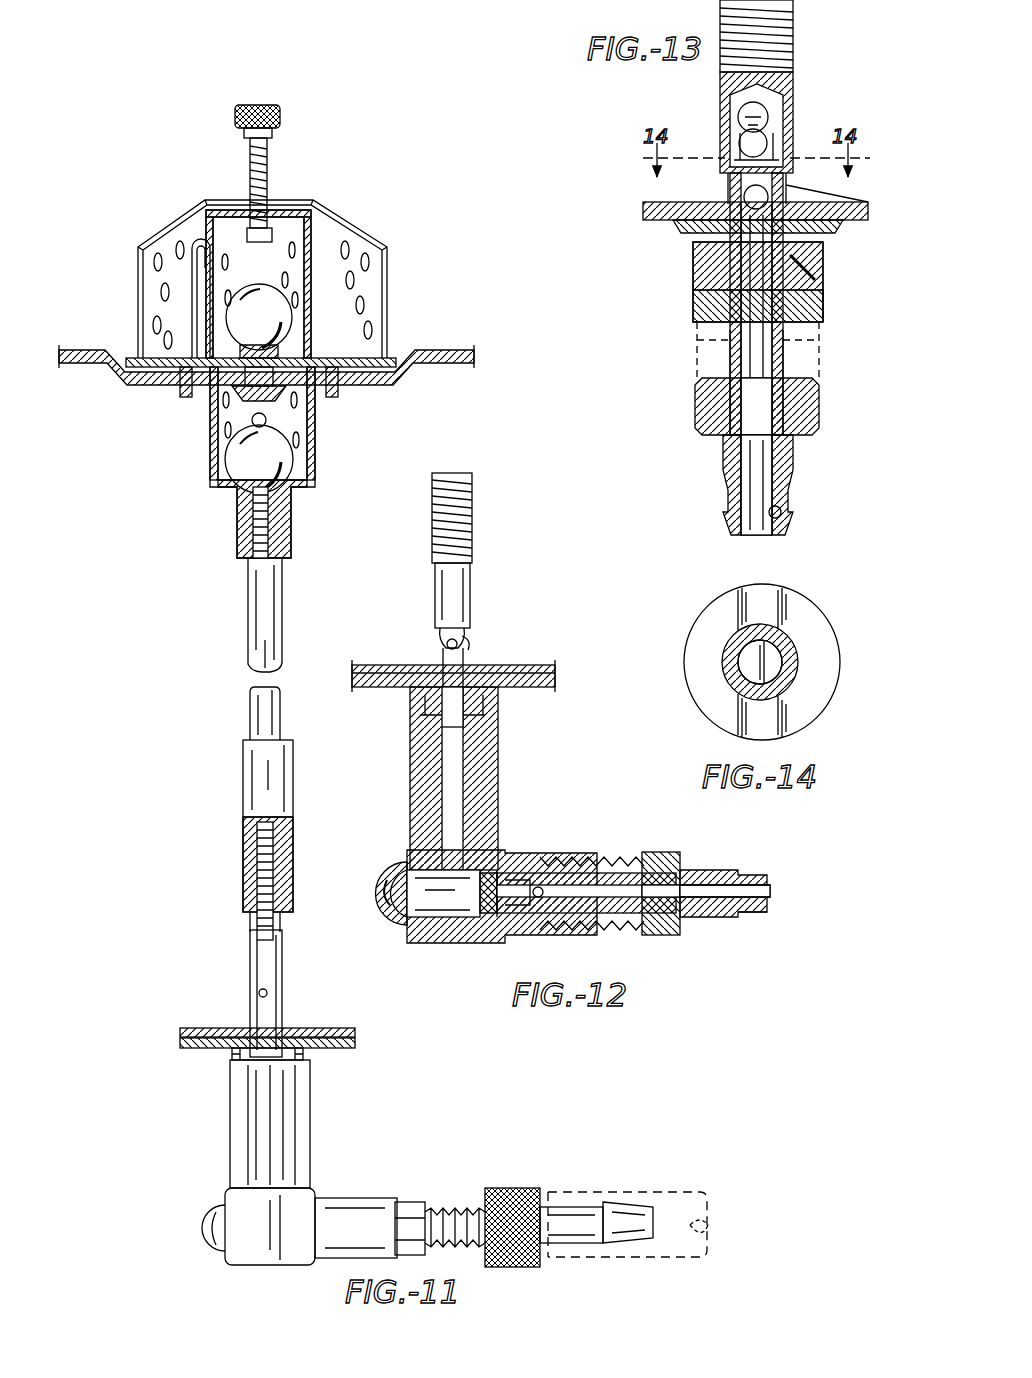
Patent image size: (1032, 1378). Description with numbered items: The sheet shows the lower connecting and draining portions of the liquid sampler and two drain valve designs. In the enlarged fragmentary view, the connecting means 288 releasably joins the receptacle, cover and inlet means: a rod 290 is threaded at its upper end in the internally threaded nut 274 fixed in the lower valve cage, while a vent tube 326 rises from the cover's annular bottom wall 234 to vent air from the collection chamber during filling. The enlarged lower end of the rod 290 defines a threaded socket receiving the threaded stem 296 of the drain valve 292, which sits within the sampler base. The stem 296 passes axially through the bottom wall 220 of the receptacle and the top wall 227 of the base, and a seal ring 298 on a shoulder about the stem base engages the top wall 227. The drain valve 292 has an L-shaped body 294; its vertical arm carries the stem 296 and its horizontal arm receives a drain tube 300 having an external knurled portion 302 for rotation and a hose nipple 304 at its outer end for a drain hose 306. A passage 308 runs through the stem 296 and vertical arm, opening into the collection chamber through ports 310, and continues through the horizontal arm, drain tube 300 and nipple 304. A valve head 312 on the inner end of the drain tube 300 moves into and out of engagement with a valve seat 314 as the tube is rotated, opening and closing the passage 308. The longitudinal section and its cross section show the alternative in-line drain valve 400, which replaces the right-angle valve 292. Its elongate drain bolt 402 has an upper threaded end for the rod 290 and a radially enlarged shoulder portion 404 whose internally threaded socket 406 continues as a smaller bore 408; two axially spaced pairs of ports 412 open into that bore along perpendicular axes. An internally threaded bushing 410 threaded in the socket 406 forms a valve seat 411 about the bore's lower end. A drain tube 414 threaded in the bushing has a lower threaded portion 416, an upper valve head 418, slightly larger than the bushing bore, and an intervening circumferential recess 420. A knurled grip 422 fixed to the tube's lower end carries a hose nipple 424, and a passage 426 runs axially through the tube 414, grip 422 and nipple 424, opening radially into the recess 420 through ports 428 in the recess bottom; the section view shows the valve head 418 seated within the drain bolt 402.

In FIG. 11, the vent tube 326 is at (190, 287).
In FIG. 11, the annular bottom wall 234 is at (438, 347).
In FIG. 11, the internally threaded nut 274 is at (236, 506).
In FIG. 11, the rod 290 is at (254, 618).
In FIG. 11, the connecting means 288 is at (215, 687).
In FIG. 11, the threaded stem 296 is at (256, 963).
In FIG. 12, the threaded stem 296 is at (458, 592).
In FIG. 11, the bottom wall 220 is at (328, 1027).
In FIG. 11, the top wall 227 is at (340, 1052).
In FIG. 11, the seal ring 298 is at (231, 1052).
In FIG. 11, the drain valve 292 is at (205, 1195).
In FIG. 11, the L-shaped body 294 is at (250, 1253).
In FIG. 11, the external knurled portion 302 is at (497, 1190).
In FIG. 12, the external knurled portion 302 is at (661, 856).
In FIG. 11, the hose nipple 304 is at (622, 1205).
In FIG. 12, the hose nipple 304 is at (742, 874).
In FIG. 11, the drain hose 306 is at (678, 1193).
In FIG. 12, the ports 310 is at (470, 642).
In FIG. 12, the valve seat 314 is at (507, 866).
In FIG. 12, the drain tube 300 is at (618, 858).
In FIG. 12, the passage 308 is at (760, 916).
In FIG. 12, the valve head 312 is at (477, 908).
In FIG. 13, the drain bolt 402 is at (720, 85).
In FIG. 14, the drain bolt 402 is at (800, 669).
In FIG. 13, the bore 408 is at (738, 117).
In FIG. 13, the valve head 418 is at (786, 134).
In FIG. 14, the valve head 418 is at (774, 655).
In FIG. 13, the ports 412 is at (727, 150).
In FIG. 13, the ports 428 is at (850, 205).
In FIG. 13, the circumferential recess 420 is at (680, 218).
In FIG. 13, the valve seat 411 is at (820, 231).
In FIG. 13, the shoulder portion 404 is at (693, 263).
In FIG. 13, the internally threaded socket 406 is at (808, 273).
In FIG. 13, the in-line drain valve 400 is at (662, 298).
In FIG. 13, the drain tube 414 is at (828, 300).
In FIG. 13, the internally threaded bushing 410 is at (693, 312).
In FIG. 13, the threaded tube 416 is at (735, 356).
In FIG. 13, the knurled grip 422 is at (700, 405).
In FIG. 13, the hose nipple 424 is at (735, 518).
In FIG. 13, the passage 426 is at (781, 512).